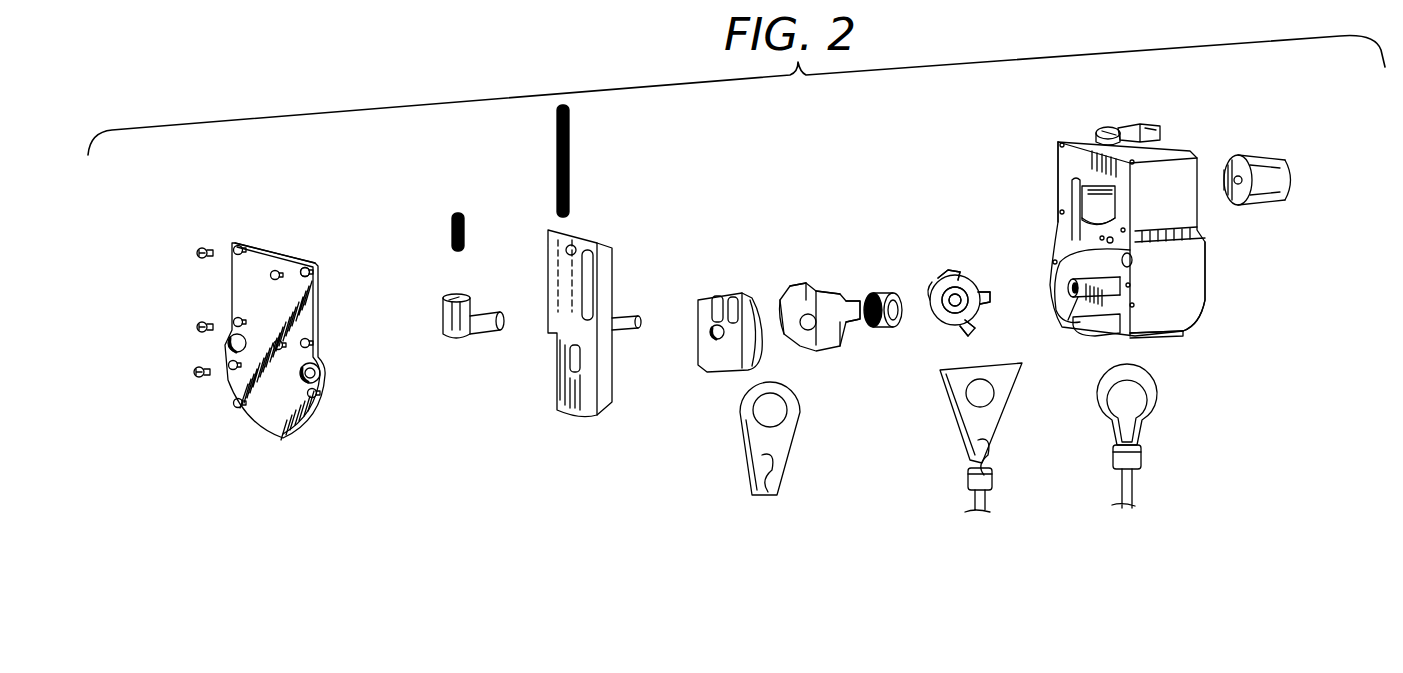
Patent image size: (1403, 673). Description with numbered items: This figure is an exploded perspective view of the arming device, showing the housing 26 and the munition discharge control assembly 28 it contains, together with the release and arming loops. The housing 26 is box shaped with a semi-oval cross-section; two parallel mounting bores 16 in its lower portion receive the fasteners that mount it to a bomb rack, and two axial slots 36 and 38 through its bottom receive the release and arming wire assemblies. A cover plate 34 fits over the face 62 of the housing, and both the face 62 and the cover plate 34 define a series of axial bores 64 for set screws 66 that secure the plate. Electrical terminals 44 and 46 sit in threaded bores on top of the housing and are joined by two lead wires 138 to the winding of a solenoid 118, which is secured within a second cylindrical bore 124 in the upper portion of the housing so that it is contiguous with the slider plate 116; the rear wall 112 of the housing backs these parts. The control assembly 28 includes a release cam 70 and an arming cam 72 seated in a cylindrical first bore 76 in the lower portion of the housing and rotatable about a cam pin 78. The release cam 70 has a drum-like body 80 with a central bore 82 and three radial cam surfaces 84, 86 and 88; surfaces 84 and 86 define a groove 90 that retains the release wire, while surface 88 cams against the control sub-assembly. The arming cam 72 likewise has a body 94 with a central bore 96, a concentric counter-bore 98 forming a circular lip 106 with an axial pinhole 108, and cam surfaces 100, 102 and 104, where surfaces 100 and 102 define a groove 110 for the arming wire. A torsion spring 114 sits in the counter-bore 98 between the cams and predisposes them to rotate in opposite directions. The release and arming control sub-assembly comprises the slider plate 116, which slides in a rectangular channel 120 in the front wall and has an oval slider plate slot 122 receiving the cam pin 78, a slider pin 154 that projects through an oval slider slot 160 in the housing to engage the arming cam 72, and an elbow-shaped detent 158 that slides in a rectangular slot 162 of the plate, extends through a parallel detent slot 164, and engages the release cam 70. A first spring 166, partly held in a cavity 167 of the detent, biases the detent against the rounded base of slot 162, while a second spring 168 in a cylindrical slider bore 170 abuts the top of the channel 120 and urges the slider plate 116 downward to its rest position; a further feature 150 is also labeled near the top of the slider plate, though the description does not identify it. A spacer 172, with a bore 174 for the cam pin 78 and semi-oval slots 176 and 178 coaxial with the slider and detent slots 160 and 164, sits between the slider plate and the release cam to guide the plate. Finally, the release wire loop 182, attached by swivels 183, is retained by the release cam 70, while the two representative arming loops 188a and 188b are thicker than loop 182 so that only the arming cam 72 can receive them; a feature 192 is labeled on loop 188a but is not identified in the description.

The mounting bores 16 is at (322, 376).
The housing 26 is at (1203, 272).
The munition discharge control assembly 28 is at (902, 155).
The cover plate 34 is at (280, 243).
The axial slot 36 is at (1075, 336).
The axial slot 38 is at (1165, 336).
The electrical terminal 44 is at (1098, 130).
The electrical terminal 46 is at (1150, 126).
The face of the housing 62 is at (1058, 158).
The axial bores 64 is at (312, 270).
The set screws 66 is at (196, 256).
The release cam 70 is at (812, 352).
The arming cam 72 is at (950, 326).
The first bore 76 is at (1058, 274).
The cam pin 78 is at (1065, 312).
The body 80 is at (842, 340).
The central bore 82 is at (820, 292).
The cam surface 84 is at (800, 282).
The cam surface 86 is at (796, 336).
The cam surface 88 is at (872, 292).
The groove 90 is at (782, 302).
The body 94 is at (980, 288).
The central bore 96 is at (948, 306).
The counter-bore 98 is at (930, 292).
The cam surface 100 is at (992, 298).
The cam surface 102 is at (968, 336).
The cam surface 104 is at (960, 270).
The circular lip 106 is at (942, 306).
The axial pinhole 108 is at (942, 274).
The groove 110 is at (978, 322).
The rear wall 112 is at (1206, 226).
The torsion spring 114 is at (856, 320).
The slider plate 116 is at (548, 325).
The solenoid 118 is at (1284, 200).
The channel 120 is at (1092, 198).
The slider plate slot 122 is at (582, 358).
The second cylindrical bore 124 is at (1082, 206).
The lead wires 138 is at (1240, 134).
The pin hole 150 is at (576, 248).
The slider pin 154 is at (634, 312).
The detent 158 is at (443, 326).
The slider slot 160 is at (1112, 240).
The rectangular slot 162 is at (594, 268).
The detent slot 164 is at (1133, 258).
The first spring 166 is at (466, 222).
The cavity 167 is at (455, 292).
The second spring 168 is at (571, 118).
The slider bore 170 is at (560, 276).
The spacer 172 is at (705, 376).
The bore 174 is at (710, 333).
The semi-oval slot 176 is at (716, 294).
The semi-oval slot 178 is at (733, 295).
The loop 182 is at (788, 436).
The swivels 183 is at (772, 490).
The loop 188a is at (996, 430).
The loop 188b is at (1150, 406).
The terminal hook 192 is at (990, 470).